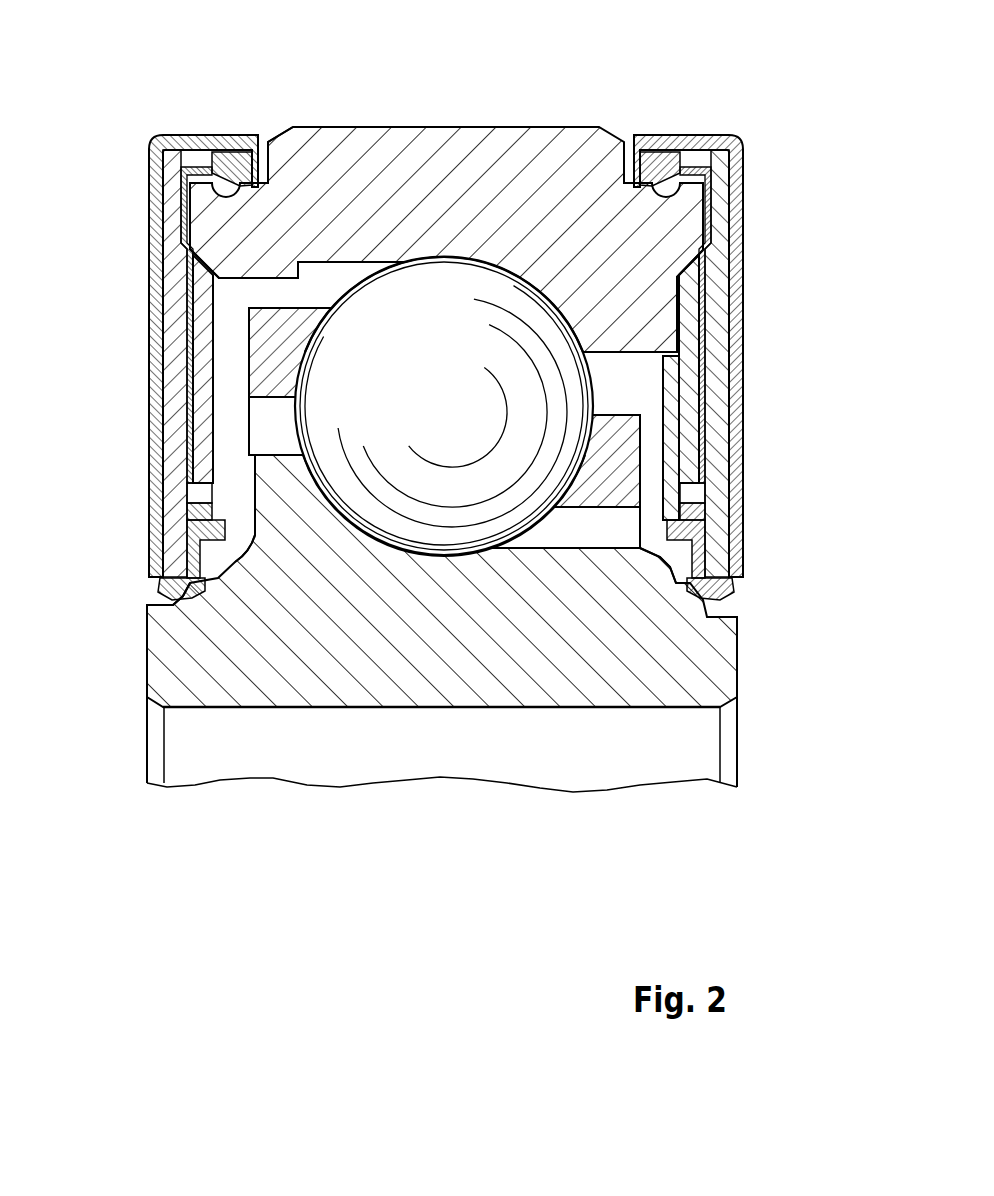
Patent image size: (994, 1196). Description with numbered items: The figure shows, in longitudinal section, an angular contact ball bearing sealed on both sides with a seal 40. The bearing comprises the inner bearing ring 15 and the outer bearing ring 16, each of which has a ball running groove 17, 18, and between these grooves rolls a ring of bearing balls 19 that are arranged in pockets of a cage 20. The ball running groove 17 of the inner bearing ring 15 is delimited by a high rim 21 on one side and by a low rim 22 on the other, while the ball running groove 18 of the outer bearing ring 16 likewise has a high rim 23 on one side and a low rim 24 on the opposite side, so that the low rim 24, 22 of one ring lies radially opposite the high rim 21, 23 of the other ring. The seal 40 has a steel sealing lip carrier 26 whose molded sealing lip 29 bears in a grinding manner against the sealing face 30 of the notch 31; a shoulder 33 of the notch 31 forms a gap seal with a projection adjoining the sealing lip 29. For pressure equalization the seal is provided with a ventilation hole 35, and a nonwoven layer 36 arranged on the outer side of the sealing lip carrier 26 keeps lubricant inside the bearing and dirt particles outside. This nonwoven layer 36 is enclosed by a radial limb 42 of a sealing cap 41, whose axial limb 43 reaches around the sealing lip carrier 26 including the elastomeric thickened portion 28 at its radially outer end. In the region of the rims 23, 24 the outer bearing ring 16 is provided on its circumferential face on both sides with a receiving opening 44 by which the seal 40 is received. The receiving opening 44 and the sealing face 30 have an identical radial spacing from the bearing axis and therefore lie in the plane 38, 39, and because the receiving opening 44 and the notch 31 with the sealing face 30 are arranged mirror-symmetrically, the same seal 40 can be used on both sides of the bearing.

The inner bearing ring 15 is at (458, 690).
The outer bearing ring 16 is at (456, 142).
The ball running groove 17 is at (382, 535).
The ball running groove 18 is at (510, 265).
The bearing balls 19 is at (432, 413).
The cage 20 is at (614, 445).
The high rim 21 is at (287, 485).
The low rim 22 is at (540, 560).
The high rim 23 is at (612, 312).
The low rim 24 is at (385, 250).
The sealing lip carrier 26 is at (170, 212).
The thickened portion 28 is at (229, 166).
The sealing lip 29 is at (210, 550).
The sealing face 30 is at (442, 561).
The notch 31 is at (180, 603).
The shoulder 33 is at (178, 580).
The ventilation hole 35 is at (196, 493).
The nonwoven layer 36 is at (165, 382).
The plane 38 is at (213, 178).
The plane 39 is at (232, 600).
The seal 40 is at (443, 435).
The sealing cap 41 is at (442, 356).
The radial limb 42 is at (158, 240).
The axial limb 43 is at (186, 134).
The receiving opening 44 is at (448, 242).